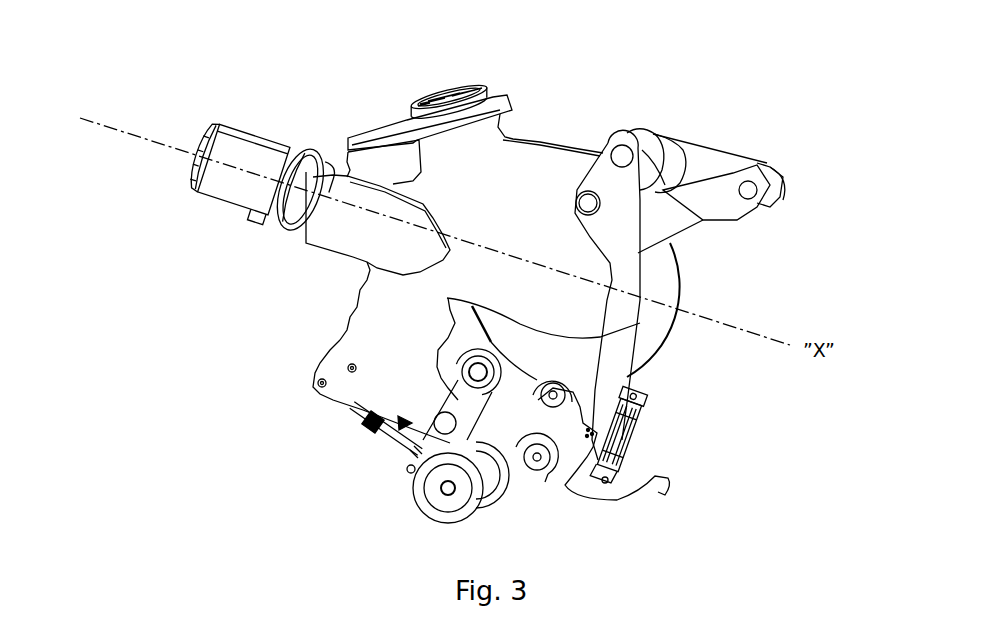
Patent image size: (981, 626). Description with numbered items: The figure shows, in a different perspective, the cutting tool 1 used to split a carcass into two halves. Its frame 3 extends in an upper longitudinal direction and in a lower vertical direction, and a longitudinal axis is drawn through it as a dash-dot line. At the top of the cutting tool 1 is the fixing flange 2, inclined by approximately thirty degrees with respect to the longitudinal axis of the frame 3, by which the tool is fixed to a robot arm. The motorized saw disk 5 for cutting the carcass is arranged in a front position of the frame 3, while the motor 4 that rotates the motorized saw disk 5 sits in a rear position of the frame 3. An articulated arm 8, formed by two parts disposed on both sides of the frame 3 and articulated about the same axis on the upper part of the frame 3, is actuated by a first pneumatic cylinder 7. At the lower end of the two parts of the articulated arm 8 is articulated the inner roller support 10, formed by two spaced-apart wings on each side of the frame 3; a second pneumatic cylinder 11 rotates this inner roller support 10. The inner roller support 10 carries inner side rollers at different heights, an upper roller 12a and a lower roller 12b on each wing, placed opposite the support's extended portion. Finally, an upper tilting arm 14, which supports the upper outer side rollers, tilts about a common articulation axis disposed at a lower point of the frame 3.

The cutting tool 1 is at (336, 118).
The fixing flange 2 is at (432, 98).
The frame 3 is at (470, 268).
The motor 4 is at (222, 208).
The motorized saw disk 5 is at (685, 280).
The first pneumatic cylinder 7 is at (733, 150).
The articulated arm 8 is at (618, 318).
The inner roller support 10 is at (618, 497).
The second pneumatic cylinder 11 is at (640, 435).
The upper inner side roller 12a is at (537, 403).
The lower inner side roller 12b is at (523, 467).
The upper tilting arm 14 is at (420, 452).